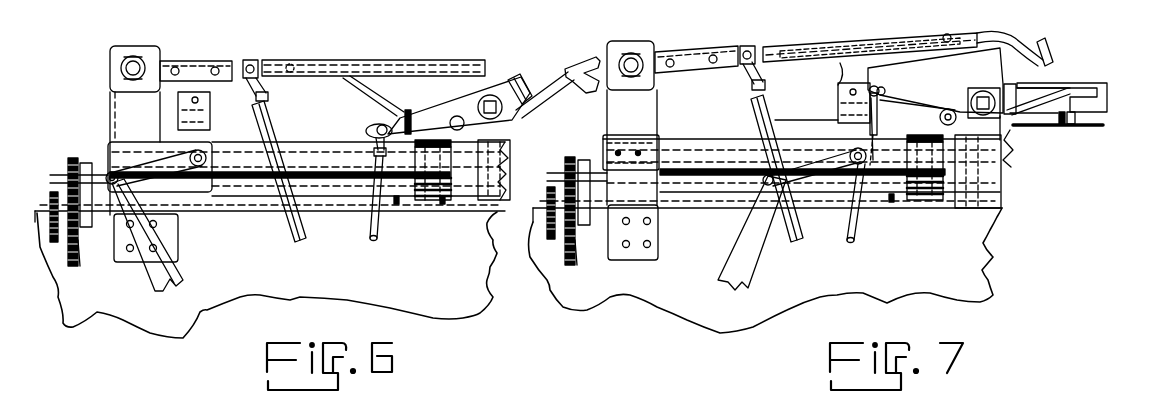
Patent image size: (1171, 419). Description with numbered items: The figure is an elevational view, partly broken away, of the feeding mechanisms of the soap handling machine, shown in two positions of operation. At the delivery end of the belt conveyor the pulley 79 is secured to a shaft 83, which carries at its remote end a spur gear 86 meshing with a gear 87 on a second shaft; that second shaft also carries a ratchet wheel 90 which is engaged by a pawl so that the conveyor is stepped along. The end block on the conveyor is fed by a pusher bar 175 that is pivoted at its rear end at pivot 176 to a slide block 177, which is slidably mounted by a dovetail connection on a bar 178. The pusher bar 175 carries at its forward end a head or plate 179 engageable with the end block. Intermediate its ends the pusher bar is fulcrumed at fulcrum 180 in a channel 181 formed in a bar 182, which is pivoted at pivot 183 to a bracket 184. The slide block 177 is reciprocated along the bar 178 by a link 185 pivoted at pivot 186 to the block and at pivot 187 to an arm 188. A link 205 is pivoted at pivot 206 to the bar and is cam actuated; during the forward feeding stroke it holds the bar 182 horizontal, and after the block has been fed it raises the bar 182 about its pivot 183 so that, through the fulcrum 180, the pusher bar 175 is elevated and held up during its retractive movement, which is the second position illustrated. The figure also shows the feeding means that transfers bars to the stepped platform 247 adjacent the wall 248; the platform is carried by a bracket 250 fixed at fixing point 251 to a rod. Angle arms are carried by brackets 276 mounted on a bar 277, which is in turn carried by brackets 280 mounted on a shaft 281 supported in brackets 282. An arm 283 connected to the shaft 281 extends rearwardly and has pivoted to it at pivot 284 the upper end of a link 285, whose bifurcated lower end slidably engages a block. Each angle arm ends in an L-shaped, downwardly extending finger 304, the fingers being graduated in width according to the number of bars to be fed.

In FIG. 6, the pulley 79 is at (398, 204).
In FIG. 6, the shaft 83 is at (352, 180).
In FIG. 6, the spur gear 86 is at (75, 158).
In FIG. 7, the spur gear 86 is at (582, 140).
In FIG. 6, the gear 87 is at (78, 262).
In FIG. 7, the gear 87 is at (576, 262).
In FIG. 6, the ratchet wheel 90 is at (54, 192).
In FIG. 7, the ratchet wheel 90 is at (553, 184).
In FIG. 6, the pusher bar 175 is at (368, 102).
In FIG. 7, the pusher bar 175 is at (992, 34).
In FIG. 7, the pivot 176 is at (842, 104).
In FIG. 6, the slide block 177 is at (207, 140).
In FIG. 7, the slide block 177 is at (803, 104).
In FIG. 6, the bar 178 is at (358, 146).
In FIG. 7, the bar 178 is at (744, 136).
In FIG. 7, the head or plate 179 is at (1046, 46).
In FIG. 6, the fulcrum 180 is at (292, 62).
In FIG. 7, the fulcrum 180 is at (948, 34).
In FIG. 6, the channel 181 is at (320, 62).
In FIG. 7, the channel 181 is at (856, 44).
In FIG. 7, the bar 182 is at (775, 46).
In FIG. 6, the pivot 183 is at (140, 56).
In FIG. 7, the pivot 183 is at (641, 56).
In FIG. 6, the bracket 184 is at (110, 66).
In FIG. 7, the bracket 184 is at (657, 108).
In FIG. 6, the link 185 is at (180, 206).
In FIG. 7, the link 185 is at (822, 238).
In FIG. 7, the pivot 186 is at (880, 135).
In FIG. 7, the pivot 187 is at (762, 182).
In FIG. 6, the arm 188 is at (178, 280).
In FIG. 7, the arm 188 is at (748, 272).
In FIG. 6, the link 205 is at (274, 126).
In FIG. 7, the link 205 is at (758, 104).
In FIG. 6, the pivot 206 is at (252, 62).
In FIG. 7, the pivot 206 is at (750, 46).
In FIG. 7, the stepped platform 247 is at (1104, 126).
In FIG. 7, the wall 248 is at (1075, 126).
In FIG. 7, the bracket 250 is at (1022, 126).
In FIG. 7, the fixing point 251 is at (958, 100).
In FIG. 6, the brackets 276 is at (532, 102).
In FIG. 7, the brackets 276 is at (1034, 84).
In FIG. 7, the bar 277 is at (1008, 84).
In FIG. 6, the brackets 280 is at (488, 94).
In FIG. 7, the brackets 280 is at (975, 92).
In FIG. 6, the shaft 281 is at (512, 114).
In FIG. 7, the shaft 281 is at (1007, 114).
In FIG. 7, the brackets 282 is at (998, 184).
In FIG. 6, the arm 283 is at (425, 104).
In FIG. 7, the arm 283 is at (918, 92).
In FIG. 6, the pivot 284 is at (377, 126).
In FIG. 7, the pivot 284 is at (876, 87).
In FIG. 6, the link 285 is at (373, 240).
In FIG. 7, the link 285 is at (858, 236).
In FIG. 6, the L-shaped finger 304 is at (586, 62).
In FIG. 7, the L-shaped finger 304 is at (1108, 100).